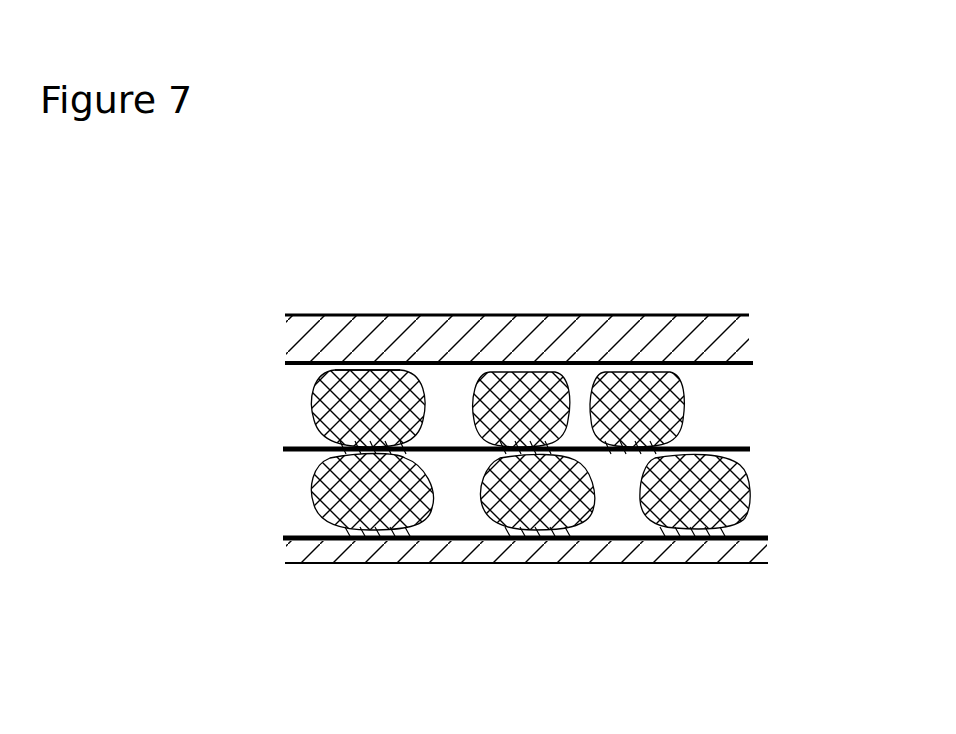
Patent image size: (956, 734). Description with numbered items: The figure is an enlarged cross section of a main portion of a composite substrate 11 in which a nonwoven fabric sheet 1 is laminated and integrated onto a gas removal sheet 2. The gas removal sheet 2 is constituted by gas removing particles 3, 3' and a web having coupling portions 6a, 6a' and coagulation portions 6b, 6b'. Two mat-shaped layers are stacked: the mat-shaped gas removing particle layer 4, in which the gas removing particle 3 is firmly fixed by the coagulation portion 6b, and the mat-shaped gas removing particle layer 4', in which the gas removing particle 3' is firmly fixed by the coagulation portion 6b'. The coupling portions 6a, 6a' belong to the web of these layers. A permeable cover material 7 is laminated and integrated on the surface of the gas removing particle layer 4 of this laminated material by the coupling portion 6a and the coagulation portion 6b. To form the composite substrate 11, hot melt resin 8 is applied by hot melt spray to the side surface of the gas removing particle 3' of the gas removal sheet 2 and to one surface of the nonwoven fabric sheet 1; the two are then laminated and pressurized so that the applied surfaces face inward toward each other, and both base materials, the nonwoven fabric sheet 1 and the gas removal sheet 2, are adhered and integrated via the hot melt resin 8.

The nonwoven fabric sheet 1 is at (710, 343).
The gas removal sheet 2 is at (776, 562).
The gas removing particle 3 is at (538, 542).
The gas removing particle 3' is at (523, 347).
The mat-shaped gas removing particle layer 4 is at (480, 664).
The mat-shaped gas removing particle layer 4' is at (486, 197).
The coupling portion 6a is at (525, 584).
The coupling portion 6a' is at (516, 344).
The coagulation portion 6b is at (372, 542).
The coagulation portion 6b' is at (370, 347).
The permeable cover material 7 is at (660, 565).
The hot melt resin 8 is at (313, 378).
The composite substrate 11 is at (758, 278).